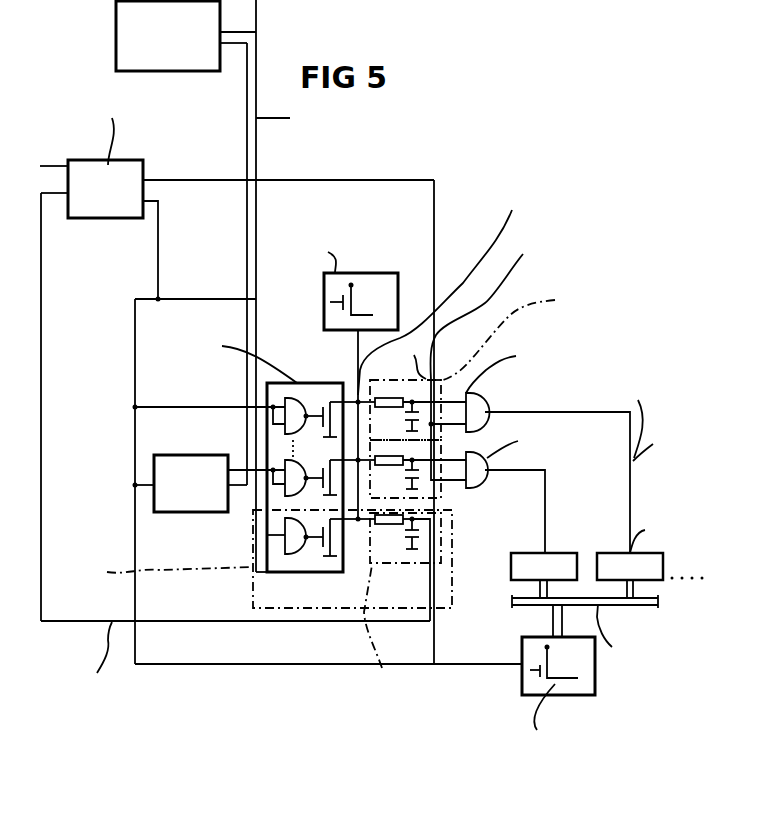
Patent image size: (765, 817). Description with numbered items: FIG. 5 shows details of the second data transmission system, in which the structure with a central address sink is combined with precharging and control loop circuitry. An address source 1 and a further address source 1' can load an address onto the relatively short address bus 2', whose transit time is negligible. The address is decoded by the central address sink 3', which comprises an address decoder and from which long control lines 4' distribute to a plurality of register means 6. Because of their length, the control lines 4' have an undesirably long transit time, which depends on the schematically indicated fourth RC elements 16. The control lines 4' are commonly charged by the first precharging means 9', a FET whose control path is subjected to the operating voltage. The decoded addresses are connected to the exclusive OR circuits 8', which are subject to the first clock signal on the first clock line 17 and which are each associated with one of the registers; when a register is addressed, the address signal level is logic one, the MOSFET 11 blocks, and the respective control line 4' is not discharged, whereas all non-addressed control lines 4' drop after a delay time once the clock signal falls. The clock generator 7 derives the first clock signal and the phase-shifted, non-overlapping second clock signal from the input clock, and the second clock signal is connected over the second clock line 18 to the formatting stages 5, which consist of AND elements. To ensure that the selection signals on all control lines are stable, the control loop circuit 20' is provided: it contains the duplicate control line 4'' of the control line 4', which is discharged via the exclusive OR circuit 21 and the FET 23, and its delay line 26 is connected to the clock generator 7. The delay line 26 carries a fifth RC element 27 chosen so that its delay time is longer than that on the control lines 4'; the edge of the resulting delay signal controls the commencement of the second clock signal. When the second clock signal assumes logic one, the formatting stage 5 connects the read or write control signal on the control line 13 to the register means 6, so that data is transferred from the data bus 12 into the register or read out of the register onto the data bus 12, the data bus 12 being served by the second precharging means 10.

The address source 1 is at (168, 55).
The address source 1' is at (190, 508).
The address bus 2' is at (295, 286).
The central address sink 3' is at (330, 363).
The control line 4' is at (474, 353).
The duplicate control line 4'' is at (322, 631).
The formatting stage 5 is at (483, 487).
The register means 6 is at (607, 553).
The clock generator 7 is at (127, 167).
The exclusive OR circuit 8' is at (237, 441).
The first precharging means 9' is at (333, 259).
The second precharging means 10 is at (533, 680).
The MOSFET 11 is at (316, 400).
The data bus 12 is at (527, 602).
The control line 13 is at (546, 508).
The fourth RC element 16 is at (438, 378).
The first clock line 17 is at (158, 256).
The second clock line 18 is at (444, 250).
The control loop circuit 20' is at (325, 560).
The exclusive OR circuit 21 is at (290, 545).
The FET 23 is at (330, 562).
The delay line 26 is at (60, 622).
The fifth RC element 27 is at (393, 563).